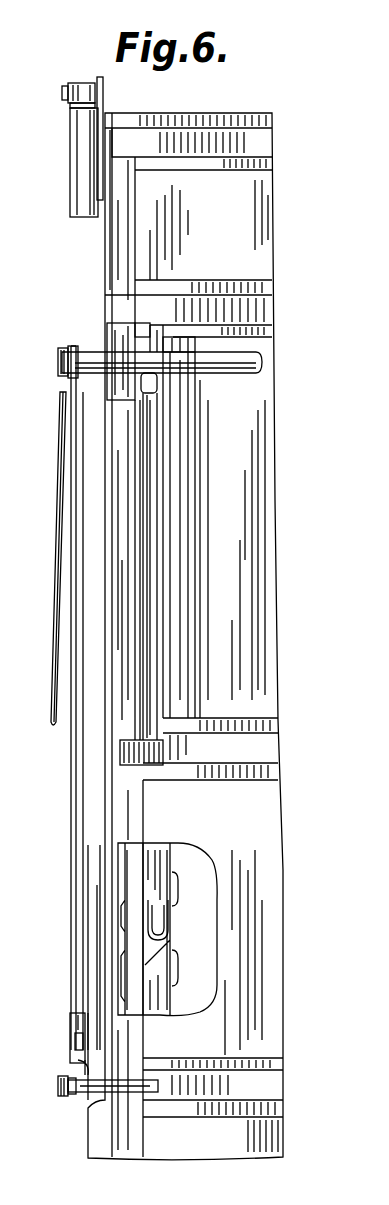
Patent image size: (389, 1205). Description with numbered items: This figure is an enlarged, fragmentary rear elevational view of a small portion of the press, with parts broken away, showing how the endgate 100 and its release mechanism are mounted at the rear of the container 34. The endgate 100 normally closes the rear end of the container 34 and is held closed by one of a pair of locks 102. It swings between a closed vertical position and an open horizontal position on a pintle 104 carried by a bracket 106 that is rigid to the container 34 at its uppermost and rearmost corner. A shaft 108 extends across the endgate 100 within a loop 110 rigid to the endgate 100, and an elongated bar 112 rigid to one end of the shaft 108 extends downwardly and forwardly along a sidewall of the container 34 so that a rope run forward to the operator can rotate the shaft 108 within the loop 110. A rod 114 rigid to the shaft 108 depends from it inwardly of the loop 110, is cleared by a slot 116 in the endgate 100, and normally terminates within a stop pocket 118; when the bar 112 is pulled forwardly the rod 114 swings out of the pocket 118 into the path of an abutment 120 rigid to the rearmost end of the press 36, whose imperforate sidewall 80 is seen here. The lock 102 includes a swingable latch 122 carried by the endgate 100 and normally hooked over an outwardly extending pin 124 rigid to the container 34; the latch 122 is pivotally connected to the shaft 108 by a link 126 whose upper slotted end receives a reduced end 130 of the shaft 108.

The container 34 is at (99, 936).
The press 36 is at (141, 877).
The sidewall 80 is at (176, 875).
The endgate 100 is at (112, 263).
The lock 102 is at (66, 1048).
The pintle 104 is at (80, 86).
The bracket 106 is at (78, 160).
The shaft 108 is at (232, 360).
The loop 110 is at (118, 330).
The bar 112 is at (75, 346).
The rod 114 is at (152, 452).
The slot 116 is at (162, 523).
The stop pocket 118 is at (157, 742).
The abutment 120 is at (167, 921).
The latch 122 is at (78, 1068).
The pin 124 is at (62, 1092).
The link 126 is at (73, 763).
The reduced end 130 is at (62, 363).